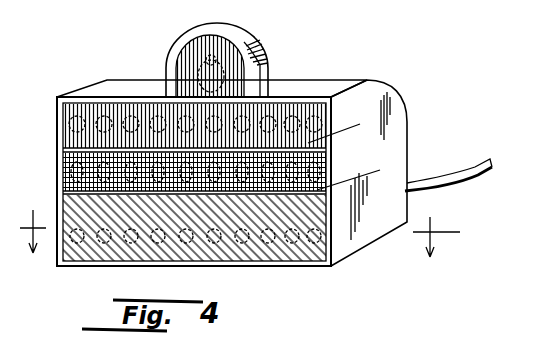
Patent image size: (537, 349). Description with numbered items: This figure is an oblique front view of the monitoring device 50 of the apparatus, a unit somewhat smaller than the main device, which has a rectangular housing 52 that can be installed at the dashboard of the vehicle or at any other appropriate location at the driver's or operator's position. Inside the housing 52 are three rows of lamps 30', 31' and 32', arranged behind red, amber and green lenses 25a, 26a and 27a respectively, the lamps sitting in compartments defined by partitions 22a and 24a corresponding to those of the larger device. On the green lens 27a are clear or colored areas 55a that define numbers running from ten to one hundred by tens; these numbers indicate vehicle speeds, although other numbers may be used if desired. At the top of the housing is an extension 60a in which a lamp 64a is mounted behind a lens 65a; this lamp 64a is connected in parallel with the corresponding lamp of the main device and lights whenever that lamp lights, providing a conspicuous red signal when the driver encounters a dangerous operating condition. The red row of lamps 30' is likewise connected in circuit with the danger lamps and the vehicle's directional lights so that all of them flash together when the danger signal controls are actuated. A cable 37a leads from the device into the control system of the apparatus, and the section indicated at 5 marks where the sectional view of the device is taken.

The section line 5- 5 is at (240, 224).
The partition 22a is at (360, 124).
The partition 24a is at (380, 170).
The red lens 25a is at (88, 110).
The amber lens 26a is at (65, 181).
The green lens 27a is at (236, 255).
The row of lamps 30' is at (171, 125).
The row of lamps 31' is at (167, 165).
The row of lamps 32' is at (174, 245).
The cable 37a is at (472, 167).
The monitoring device 50 is at (364, 67).
The rectangular housing 52 is at (357, 223).
The clear or colored areas 55a is at (88, 214).
The extension 60a is at (248, 42).
The lamp 64a is at (193, 60).
The lens 65a is at (232, 75).